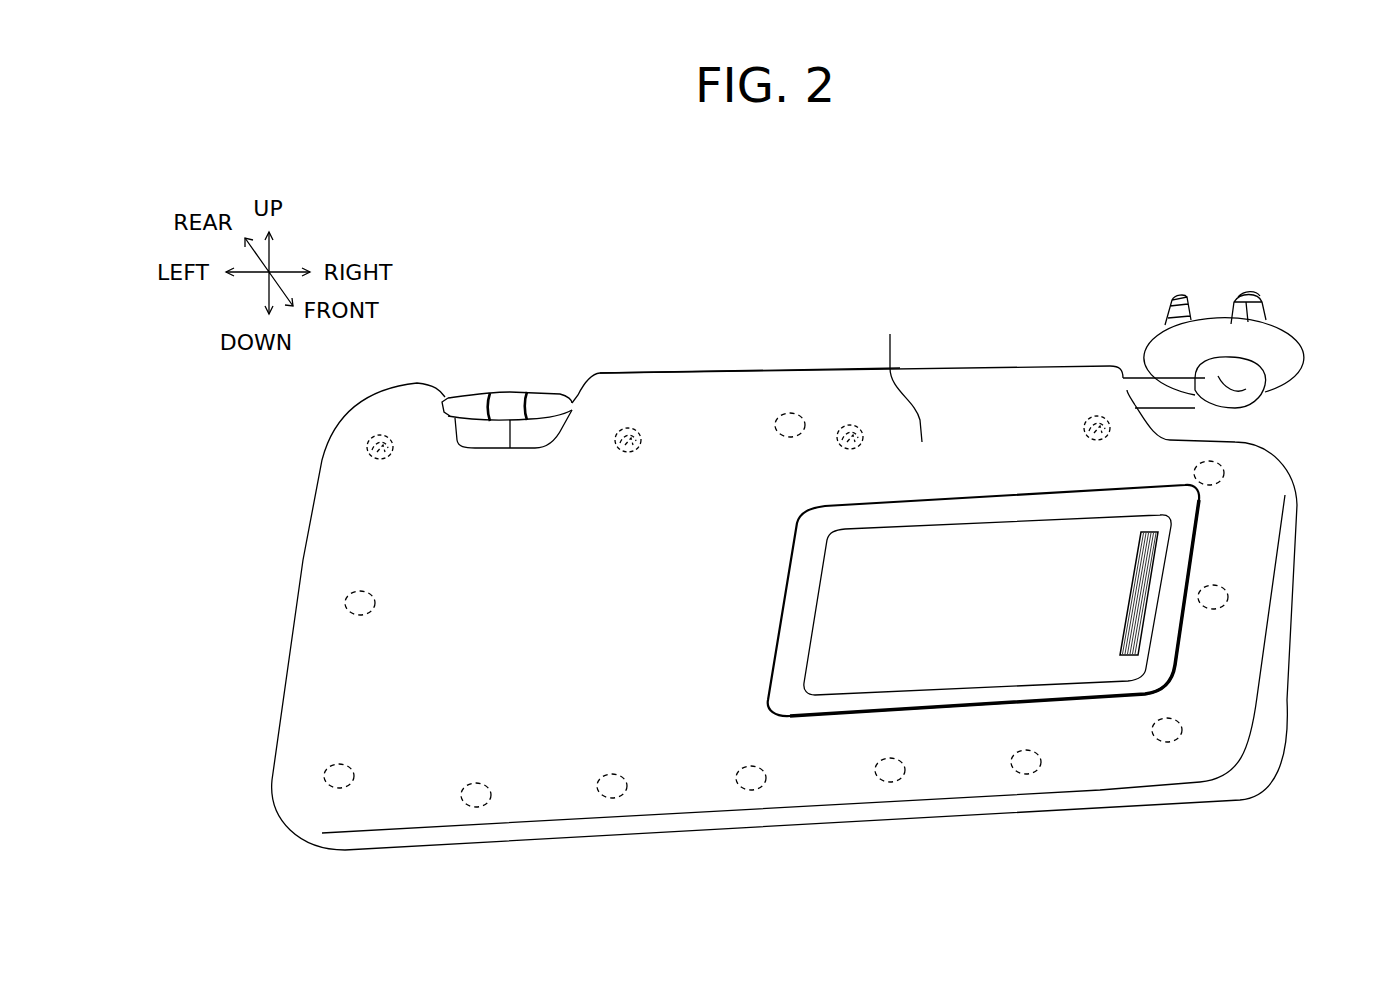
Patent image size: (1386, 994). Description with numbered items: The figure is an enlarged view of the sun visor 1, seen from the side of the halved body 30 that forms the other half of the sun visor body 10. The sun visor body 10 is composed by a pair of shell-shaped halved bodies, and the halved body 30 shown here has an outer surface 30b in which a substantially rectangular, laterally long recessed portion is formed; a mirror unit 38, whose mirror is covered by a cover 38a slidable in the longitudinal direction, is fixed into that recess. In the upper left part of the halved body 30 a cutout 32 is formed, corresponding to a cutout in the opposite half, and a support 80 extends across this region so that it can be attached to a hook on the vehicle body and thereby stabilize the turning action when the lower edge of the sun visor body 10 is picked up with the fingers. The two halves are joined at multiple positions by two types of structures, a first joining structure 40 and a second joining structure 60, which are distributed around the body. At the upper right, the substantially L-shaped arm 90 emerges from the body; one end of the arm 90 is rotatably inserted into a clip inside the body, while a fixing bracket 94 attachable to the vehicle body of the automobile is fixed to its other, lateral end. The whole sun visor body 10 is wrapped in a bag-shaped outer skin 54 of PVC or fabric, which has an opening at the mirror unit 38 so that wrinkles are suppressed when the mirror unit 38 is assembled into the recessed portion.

The sun visor 1 is at (937, 284).
The sun visor body 10 is at (955, 346).
The halved body of the other half 30 is at (784, 548).
The outer surface of halved body 30b is at (710, 410).
The cutout 32 is at (510, 422).
The mirror unit 38 is at (983, 681).
The cover 38a is at (858, 670).
The first joining structure 40 is at (378, 430).
The outer skin 54 is at (897, 373).
The second joining structure 60 is at (788, 408).
The support 80 is at (500, 405).
The arm 90 is at (1200, 406).
The fixing bracket 94 is at (1280, 352).